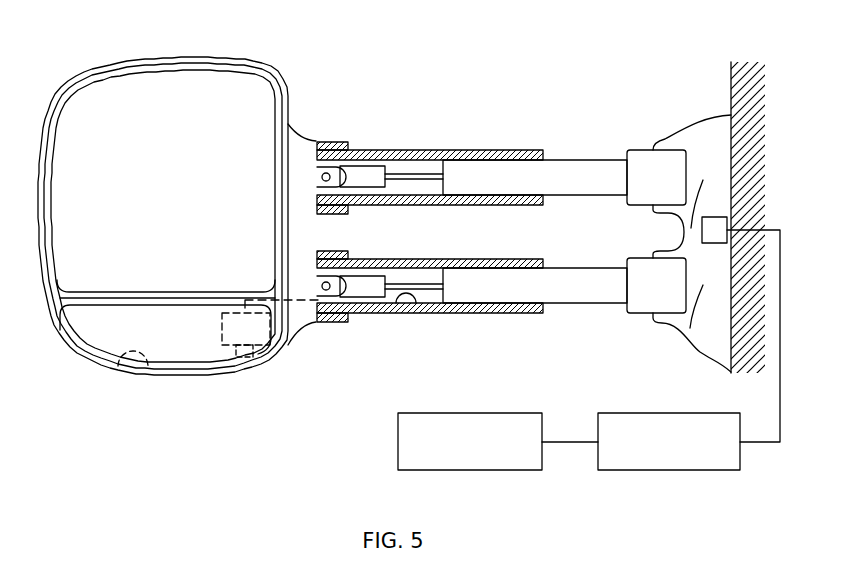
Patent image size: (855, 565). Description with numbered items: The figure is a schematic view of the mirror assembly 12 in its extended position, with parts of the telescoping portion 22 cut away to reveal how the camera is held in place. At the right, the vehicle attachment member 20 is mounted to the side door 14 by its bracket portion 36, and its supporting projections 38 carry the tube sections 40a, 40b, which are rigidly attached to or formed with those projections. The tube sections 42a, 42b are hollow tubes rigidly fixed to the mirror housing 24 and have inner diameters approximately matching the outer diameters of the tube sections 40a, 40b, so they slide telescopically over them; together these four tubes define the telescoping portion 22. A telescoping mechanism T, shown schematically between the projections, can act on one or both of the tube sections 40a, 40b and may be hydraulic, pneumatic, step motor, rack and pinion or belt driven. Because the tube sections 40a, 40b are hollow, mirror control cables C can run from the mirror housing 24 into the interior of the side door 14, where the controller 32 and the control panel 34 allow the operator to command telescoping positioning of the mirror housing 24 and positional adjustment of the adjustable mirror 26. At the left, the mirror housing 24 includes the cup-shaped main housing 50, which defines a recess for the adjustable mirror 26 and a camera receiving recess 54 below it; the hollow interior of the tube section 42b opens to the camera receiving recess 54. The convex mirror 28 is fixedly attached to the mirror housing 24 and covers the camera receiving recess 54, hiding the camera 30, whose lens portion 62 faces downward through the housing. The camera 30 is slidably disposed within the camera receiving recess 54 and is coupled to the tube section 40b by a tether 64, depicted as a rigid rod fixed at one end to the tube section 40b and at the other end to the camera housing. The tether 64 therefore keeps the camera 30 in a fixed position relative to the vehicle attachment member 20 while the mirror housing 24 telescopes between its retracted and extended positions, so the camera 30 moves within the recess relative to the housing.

The mirror assembly 12 is at (542, 72).
The side door 14 is at (748, 99).
The vehicle attachment member 20 is at (712, 106).
The telescoping portion 22 is at (495, 146).
The mirror housing 24 is at (229, 58).
The adjustable mirror 26 is at (92, 158).
The convex mirror 28 is at (92, 322).
The camera 30 is at (240, 327).
The controller 32 is at (659, 455).
The control panel 34 is at (461, 455).
The bracket portion 36 is at (697, 140).
The supporting projections 38 is at (650, 175).
The tube section 40a is at (579, 175).
The tube section 40b is at (588, 290).
The tube section 42a is at (417, 150).
The tube section 42b is at (460, 313).
The main housing 50 is at (127, 62).
The camera receiving recess 54 is at (150, 368).
The lens portion 62 is at (240, 358).
The tether 64 is at (402, 297).
The telescoping mechanism T is at (703, 231).
The mirror control cables C is at (782, 265).